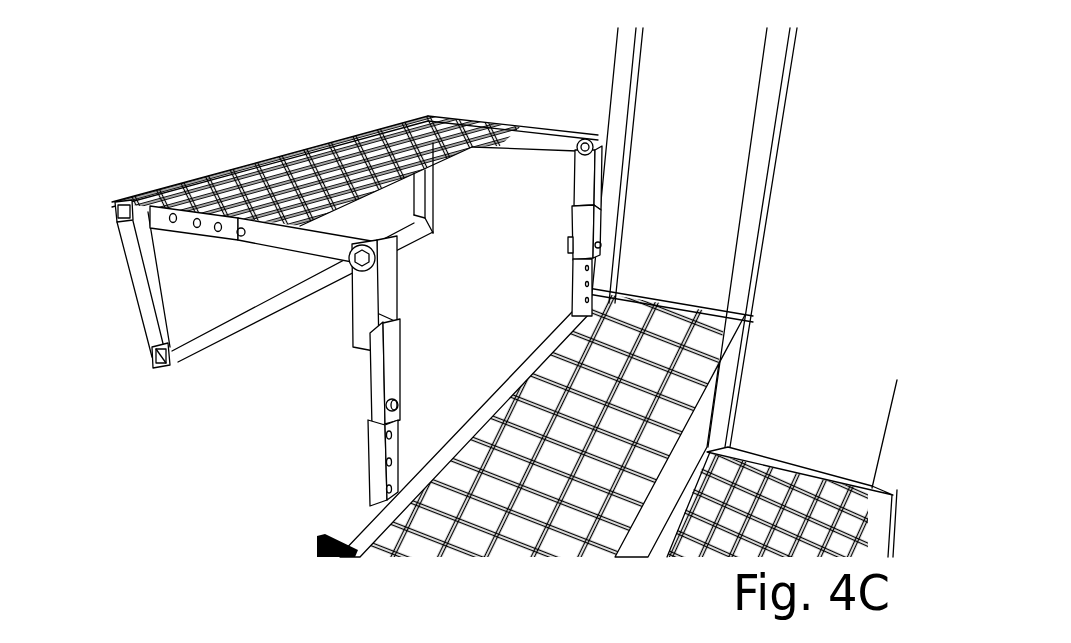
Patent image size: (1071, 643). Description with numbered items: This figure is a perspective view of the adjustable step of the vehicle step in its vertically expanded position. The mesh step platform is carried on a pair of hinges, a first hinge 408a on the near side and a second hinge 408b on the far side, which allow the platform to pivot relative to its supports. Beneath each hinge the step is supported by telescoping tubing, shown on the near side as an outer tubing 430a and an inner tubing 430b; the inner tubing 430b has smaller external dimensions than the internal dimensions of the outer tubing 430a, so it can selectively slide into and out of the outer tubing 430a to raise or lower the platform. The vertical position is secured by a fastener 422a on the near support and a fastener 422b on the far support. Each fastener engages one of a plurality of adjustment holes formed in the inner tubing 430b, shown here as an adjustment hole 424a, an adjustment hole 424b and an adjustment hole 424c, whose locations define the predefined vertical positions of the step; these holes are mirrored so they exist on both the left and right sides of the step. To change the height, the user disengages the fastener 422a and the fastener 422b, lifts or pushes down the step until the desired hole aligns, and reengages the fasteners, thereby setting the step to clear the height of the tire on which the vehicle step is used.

The first hinge 408a is at (375, 260).
The second hinge 408b is at (597, 139).
The fastener 422a is at (398, 404).
The fastener 422b is at (594, 243).
The adjustment hole 424a is at (386, 489).
The adjustment hole 424b is at (386, 462).
The adjustment hole 424c is at (386, 436).
The outer tubing 430a is at (368, 371).
The inner tubing 430b is at (365, 450).